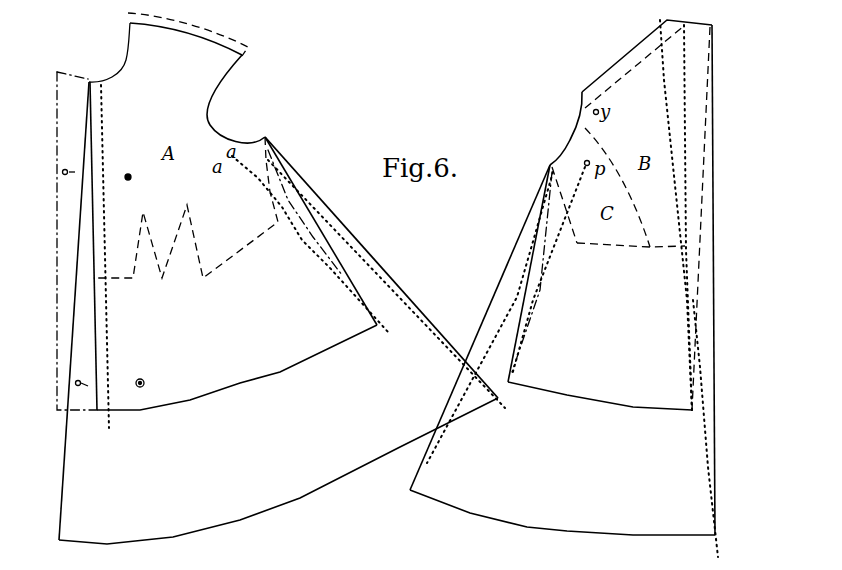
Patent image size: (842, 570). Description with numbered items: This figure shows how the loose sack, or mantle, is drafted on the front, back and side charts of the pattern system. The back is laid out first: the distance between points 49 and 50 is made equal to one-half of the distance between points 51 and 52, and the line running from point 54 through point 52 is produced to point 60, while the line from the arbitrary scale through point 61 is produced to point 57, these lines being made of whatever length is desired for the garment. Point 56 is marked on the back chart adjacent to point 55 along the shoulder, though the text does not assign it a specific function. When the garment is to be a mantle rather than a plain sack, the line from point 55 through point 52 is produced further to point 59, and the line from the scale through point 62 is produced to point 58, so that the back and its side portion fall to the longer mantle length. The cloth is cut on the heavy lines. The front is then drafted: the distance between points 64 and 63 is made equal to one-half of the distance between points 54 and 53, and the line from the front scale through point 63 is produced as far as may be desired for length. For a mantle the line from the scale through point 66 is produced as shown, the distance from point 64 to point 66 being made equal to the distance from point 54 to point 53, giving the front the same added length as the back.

The back point 49 is at (480, 323).
The back point 50 is at (566, 128).
The back point 51 is at (620, 197).
The back point 52 is at (740, 233).
The front point 53 is at (710, 215).
The chart point 54 is at (640, 210).
The back point 55 is at (675, 208).
The shoulder seam line 56 is at (647, 55).
The back extension point 57 is at (530, 274).
The mantle extension point 58 is at (562, 506).
The mantle extension point 59 is at (713, 428).
The back extension point 60 is at (600, 406).
The back point 61 is at (570, 241).
The back point 62 is at (564, 205).
The front point 63 is at (291, 228).
The front point 64 is at (185, 207).
The front mantle point 66 is at (308, 227).